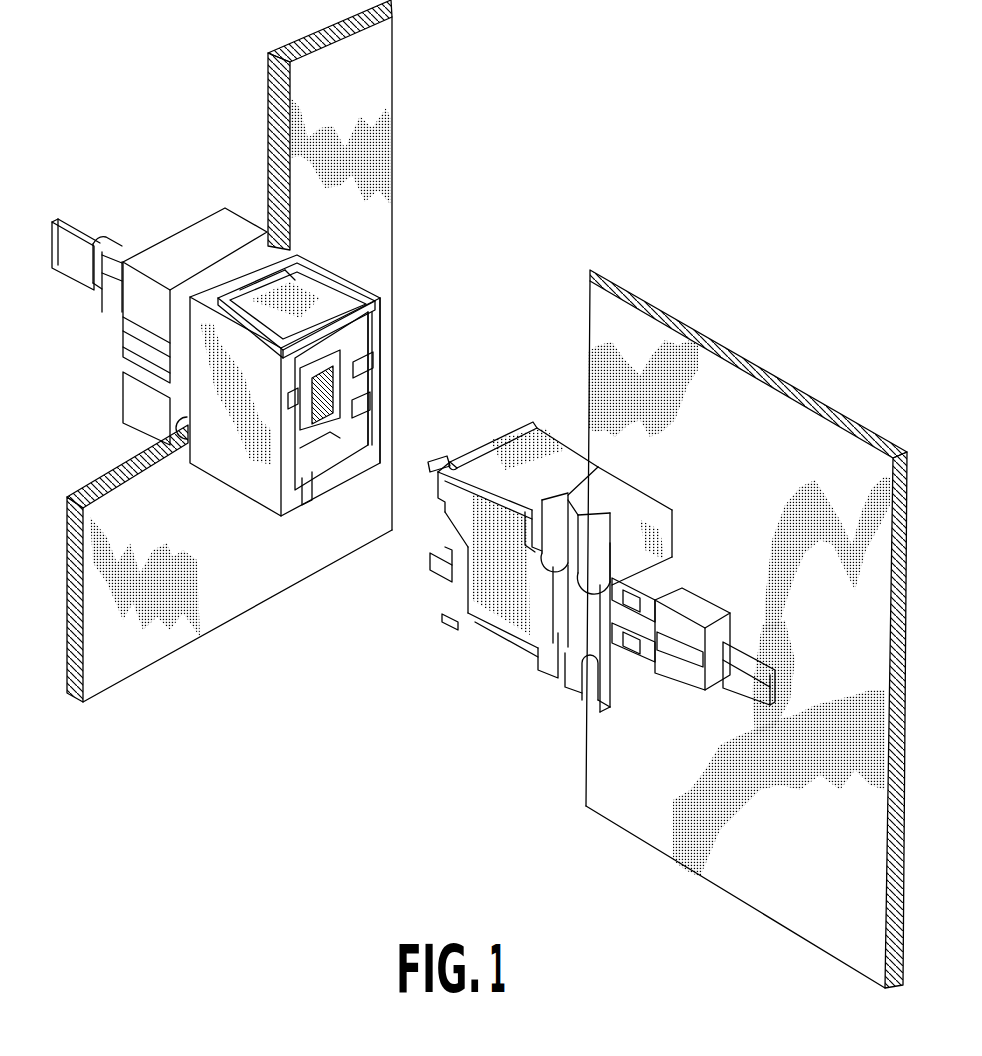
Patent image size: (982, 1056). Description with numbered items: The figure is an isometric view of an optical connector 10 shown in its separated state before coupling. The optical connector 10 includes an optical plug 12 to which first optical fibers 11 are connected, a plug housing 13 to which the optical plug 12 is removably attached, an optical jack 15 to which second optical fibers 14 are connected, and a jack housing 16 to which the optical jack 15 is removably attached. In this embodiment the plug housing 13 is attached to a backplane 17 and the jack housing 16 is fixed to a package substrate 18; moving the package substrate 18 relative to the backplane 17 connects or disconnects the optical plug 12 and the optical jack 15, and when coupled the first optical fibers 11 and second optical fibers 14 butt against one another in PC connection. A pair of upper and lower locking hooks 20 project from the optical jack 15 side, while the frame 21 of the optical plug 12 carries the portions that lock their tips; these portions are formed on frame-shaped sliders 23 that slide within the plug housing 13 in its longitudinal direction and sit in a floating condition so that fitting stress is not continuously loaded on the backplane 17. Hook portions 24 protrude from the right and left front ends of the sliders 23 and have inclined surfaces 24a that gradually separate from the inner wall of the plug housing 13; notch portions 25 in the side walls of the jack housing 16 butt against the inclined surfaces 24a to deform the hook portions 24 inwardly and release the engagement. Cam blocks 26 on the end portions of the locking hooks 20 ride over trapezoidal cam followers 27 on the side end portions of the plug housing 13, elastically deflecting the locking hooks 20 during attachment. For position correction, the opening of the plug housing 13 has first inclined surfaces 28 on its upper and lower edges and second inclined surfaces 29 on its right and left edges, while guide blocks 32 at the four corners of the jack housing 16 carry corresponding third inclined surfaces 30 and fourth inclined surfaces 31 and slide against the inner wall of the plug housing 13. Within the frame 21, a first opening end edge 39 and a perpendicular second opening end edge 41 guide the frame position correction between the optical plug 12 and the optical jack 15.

The optical connector 10 is at (579, 154).
The first optical fibers 11 is at (62, 268).
The optical plug 12 is at (122, 254).
The plug housing 13 is at (130, 402).
The second optical fibers 14 is at (746, 692).
The optical jack 15 is at (697, 607).
The jack housing 16 is at (630, 488).
The backplane 17 is at (385, 78).
The package substrate 18 is at (700, 862).
The locking hooks 20 is at (506, 426).
The frame 21 is at (294, 430).
The sliders 23 is at (364, 346).
The hook portions 24 is at (287, 398).
The inclined surfaces 24a is at (364, 368).
The notch portions 25 is at (476, 585).
The cam blocks 26 is at (533, 423).
The cam followers 27 is at (338, 293).
The first inclined surfaces 28 is at (308, 488).
The second inclined surfaces 29 is at (374, 420).
The third inclined surfaces 30 is at (432, 466).
The fourth inclined surfaces 31 is at (431, 576).
The guide blocks 32 is at (440, 470).
The first opening end edge 39 is at (323, 440).
The second opening end edge 41 is at (305, 390).